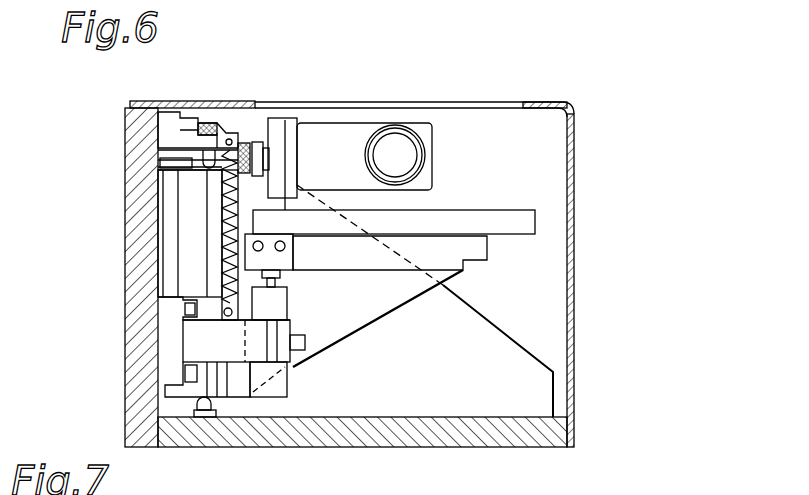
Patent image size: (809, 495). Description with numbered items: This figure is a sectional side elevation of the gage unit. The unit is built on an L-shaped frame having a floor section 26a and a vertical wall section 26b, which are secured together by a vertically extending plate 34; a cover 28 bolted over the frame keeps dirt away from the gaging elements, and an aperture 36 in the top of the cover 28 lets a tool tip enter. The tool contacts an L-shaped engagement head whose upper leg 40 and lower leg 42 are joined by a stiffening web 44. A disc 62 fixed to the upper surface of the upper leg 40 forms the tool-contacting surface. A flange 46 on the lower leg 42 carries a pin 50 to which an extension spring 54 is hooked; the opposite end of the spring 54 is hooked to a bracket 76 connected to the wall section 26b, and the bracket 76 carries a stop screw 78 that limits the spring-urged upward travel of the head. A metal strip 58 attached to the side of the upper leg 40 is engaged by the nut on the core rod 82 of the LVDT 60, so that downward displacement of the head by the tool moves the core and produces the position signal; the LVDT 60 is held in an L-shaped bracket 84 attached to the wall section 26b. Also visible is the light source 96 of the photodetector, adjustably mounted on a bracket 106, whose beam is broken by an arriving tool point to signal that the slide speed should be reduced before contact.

The floor section 26a is at (453, 433).
The vertical wall section 26b is at (140, 311).
The cover 28 is at (572, 253).
The vertically extending plate 34 is at (535, 368).
The aperture 36 is at (527, 101).
The upper leg 40 is at (478, 245).
The lower leg 42 is at (218, 265).
The stiffening web 44 is at (395, 288).
The flange 46 is at (232, 373).
The pin 50 is at (232, 312).
The spring 54 is at (225, 204).
The metal strip 58 is at (283, 258).
The LVDT 60 is at (270, 378).
The disc 62 is at (526, 220).
The bracket 76 is at (168, 127).
The screw 78 is at (200, 158).
The core rod 82 is at (275, 283).
The L-shaped bracket 84 is at (188, 343).
The light source 96 is at (398, 145).
The bracket 106 is at (276, 129).